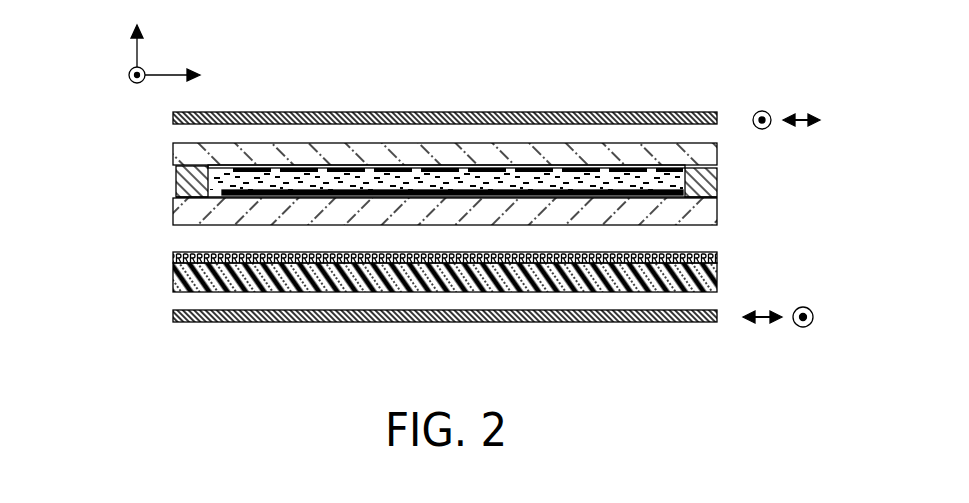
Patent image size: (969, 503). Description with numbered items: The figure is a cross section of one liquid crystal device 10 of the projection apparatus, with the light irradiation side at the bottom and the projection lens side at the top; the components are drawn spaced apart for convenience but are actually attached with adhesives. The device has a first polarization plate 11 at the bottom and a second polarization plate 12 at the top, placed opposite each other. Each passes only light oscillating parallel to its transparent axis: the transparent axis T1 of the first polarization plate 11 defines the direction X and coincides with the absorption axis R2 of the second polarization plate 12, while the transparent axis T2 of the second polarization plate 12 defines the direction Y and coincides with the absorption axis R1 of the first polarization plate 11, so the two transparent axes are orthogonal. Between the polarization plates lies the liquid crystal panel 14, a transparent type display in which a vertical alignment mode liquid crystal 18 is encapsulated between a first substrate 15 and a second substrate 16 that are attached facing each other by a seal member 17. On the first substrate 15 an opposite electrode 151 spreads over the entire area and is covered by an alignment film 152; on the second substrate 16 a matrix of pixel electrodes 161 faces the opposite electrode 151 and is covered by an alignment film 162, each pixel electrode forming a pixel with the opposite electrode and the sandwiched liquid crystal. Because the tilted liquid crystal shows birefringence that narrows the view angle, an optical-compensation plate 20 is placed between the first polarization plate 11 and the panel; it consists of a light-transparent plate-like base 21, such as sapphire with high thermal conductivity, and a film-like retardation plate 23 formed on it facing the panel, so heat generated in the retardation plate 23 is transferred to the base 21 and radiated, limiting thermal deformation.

The liquid crystal device 10 is at (598, 105).
The first polarization plate 11 is at (173, 315).
The second polarization plate 12 is at (173, 116).
The liquid crystal panel 14 is at (725, 228).
The first substrate 15 is at (717, 220).
The opposite electrode 151 is at (293, 198).
The alignment film 152 is at (178, 199).
The second substrate 16 is at (717, 155).
The pixel electrodes 161 is at (645, 178).
The alignment film 162 is at (185, 165).
The seal member 17 is at (717, 190).
The liquid crystal 18 is at (180, 180).
The optical-compensation plate 20 is at (102, 250).
The plate-like base 21 is at (173, 281).
The retardation plate 23 is at (173, 257).
The transparent axis of the second polarization plate T2 is at (762, 110).
The absorption axis of the second polarization plate R2 is at (808, 113).
The transparent axis of the first polarization plate T1 is at (762, 320).
The absorption axis of the first polarization plate R1 is at (803, 328).